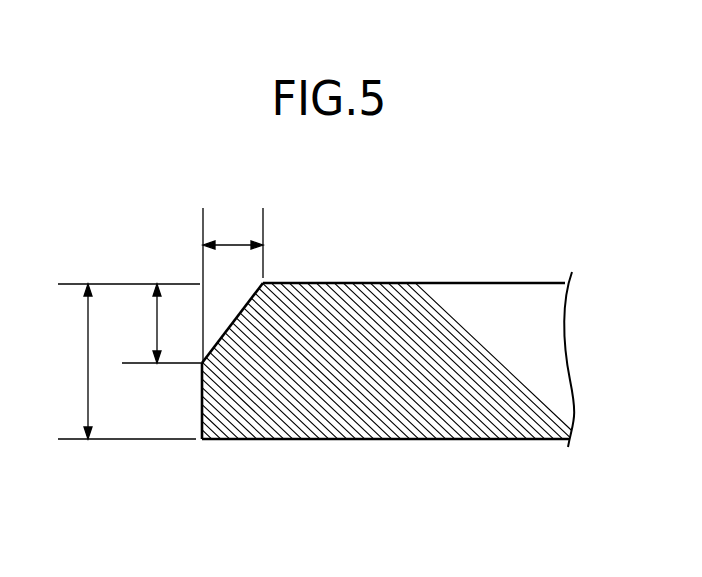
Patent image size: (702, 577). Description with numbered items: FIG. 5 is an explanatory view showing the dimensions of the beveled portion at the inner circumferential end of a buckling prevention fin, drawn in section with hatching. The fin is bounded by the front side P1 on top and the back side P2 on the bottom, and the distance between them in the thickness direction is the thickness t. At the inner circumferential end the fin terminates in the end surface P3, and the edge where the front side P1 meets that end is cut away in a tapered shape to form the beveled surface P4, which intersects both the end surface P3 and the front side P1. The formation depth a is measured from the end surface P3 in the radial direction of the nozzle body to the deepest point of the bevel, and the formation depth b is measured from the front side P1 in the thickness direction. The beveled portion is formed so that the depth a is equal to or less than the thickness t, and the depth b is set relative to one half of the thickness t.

The front side P1 is at (392, 284).
The back side P2 is at (388, 440).
The end surface P3 is at (202, 393).
The beveled surface P4 is at (247, 305).
The formation depth from the end surface a is at (233, 232).
The formation depth from the front side b is at (148, 323).
The thickness t is at (81, 361).